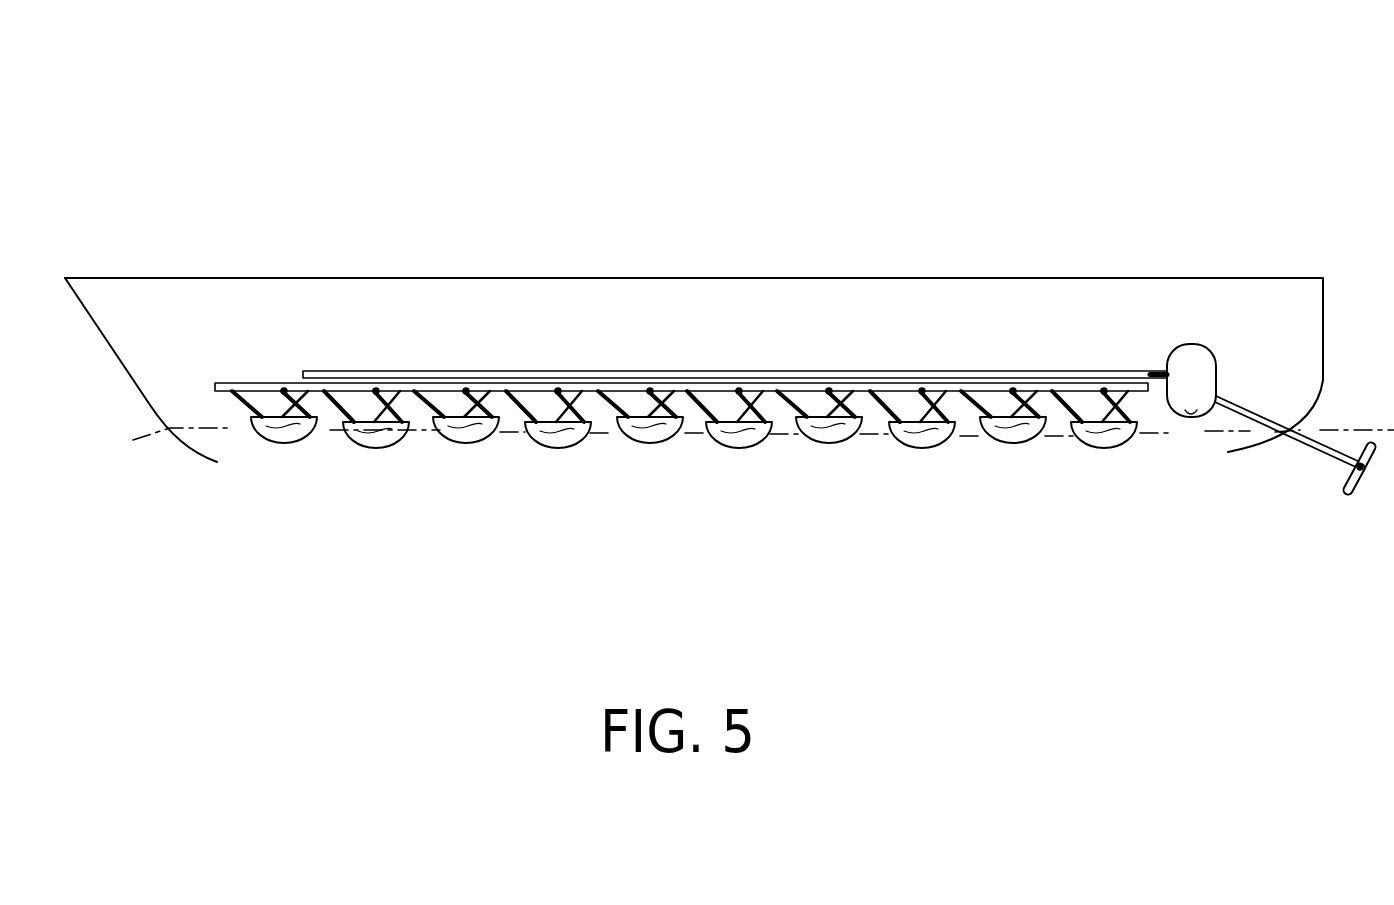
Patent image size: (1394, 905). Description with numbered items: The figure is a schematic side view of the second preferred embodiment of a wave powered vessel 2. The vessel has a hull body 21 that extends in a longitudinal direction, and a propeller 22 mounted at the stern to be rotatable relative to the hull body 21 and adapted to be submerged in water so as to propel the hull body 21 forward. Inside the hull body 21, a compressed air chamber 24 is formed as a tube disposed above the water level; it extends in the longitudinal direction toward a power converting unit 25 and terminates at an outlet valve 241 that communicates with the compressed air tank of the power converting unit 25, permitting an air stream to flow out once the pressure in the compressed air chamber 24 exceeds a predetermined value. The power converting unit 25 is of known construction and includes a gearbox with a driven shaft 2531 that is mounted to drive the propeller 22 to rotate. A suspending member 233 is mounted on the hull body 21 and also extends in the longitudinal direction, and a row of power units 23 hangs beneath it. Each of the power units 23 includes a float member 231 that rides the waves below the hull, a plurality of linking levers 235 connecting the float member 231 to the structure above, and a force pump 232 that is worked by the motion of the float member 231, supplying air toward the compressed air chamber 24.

The wave powered vessel 2 is at (745, 175).
The hull body 21 is at (991, 278).
The propeller 22 is at (1352, 492).
The power units 23 is at (536, 372).
The compressed air chamber 24 is at (405, 371).
The power converting unit 25 is at (1187, 418).
The float member 231 is at (278, 445).
The force pump 232 is at (311, 404).
The suspending member 233 is at (283, 368).
The linking levers 235 is at (247, 406).
The outlet valve 241 is at (1165, 362).
The driven shaft 2531 is at (1212, 424).